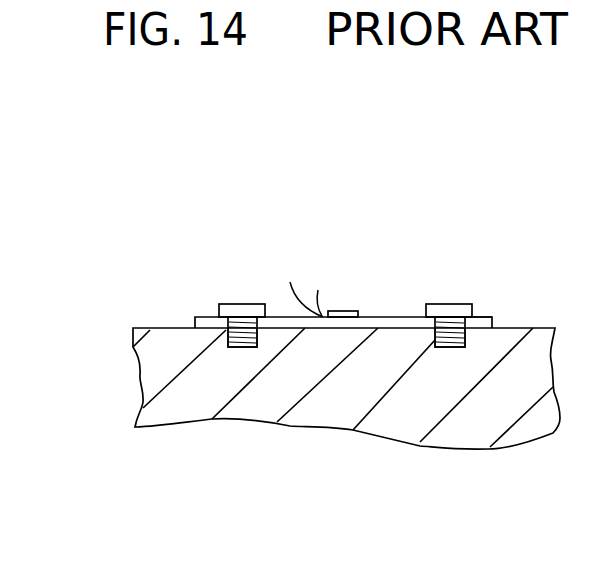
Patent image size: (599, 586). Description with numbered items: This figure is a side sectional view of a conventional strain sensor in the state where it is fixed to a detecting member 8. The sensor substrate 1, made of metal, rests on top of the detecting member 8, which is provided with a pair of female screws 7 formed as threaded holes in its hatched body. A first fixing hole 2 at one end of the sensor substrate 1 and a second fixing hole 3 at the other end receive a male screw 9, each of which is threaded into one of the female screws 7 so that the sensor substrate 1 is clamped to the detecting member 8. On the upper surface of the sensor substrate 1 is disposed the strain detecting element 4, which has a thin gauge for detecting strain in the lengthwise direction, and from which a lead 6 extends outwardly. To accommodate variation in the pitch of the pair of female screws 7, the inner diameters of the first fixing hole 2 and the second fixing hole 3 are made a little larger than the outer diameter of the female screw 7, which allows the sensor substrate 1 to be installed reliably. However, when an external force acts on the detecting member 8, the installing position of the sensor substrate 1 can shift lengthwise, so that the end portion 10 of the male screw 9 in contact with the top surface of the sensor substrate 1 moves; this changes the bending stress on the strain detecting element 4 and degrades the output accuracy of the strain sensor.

The sensor substrate 1 is at (278, 312).
The first fixing hole 2 is at (475, 313).
The second fixing hole 3 is at (221, 329).
The strain detecting element 4 is at (352, 310).
The lead 6 is at (290, 282).
The female screw 7 is at (445, 348).
The detecting member 8 is at (520, 435).
The male screw 9 is at (450, 312).
The end portion 10 is at (257, 347).